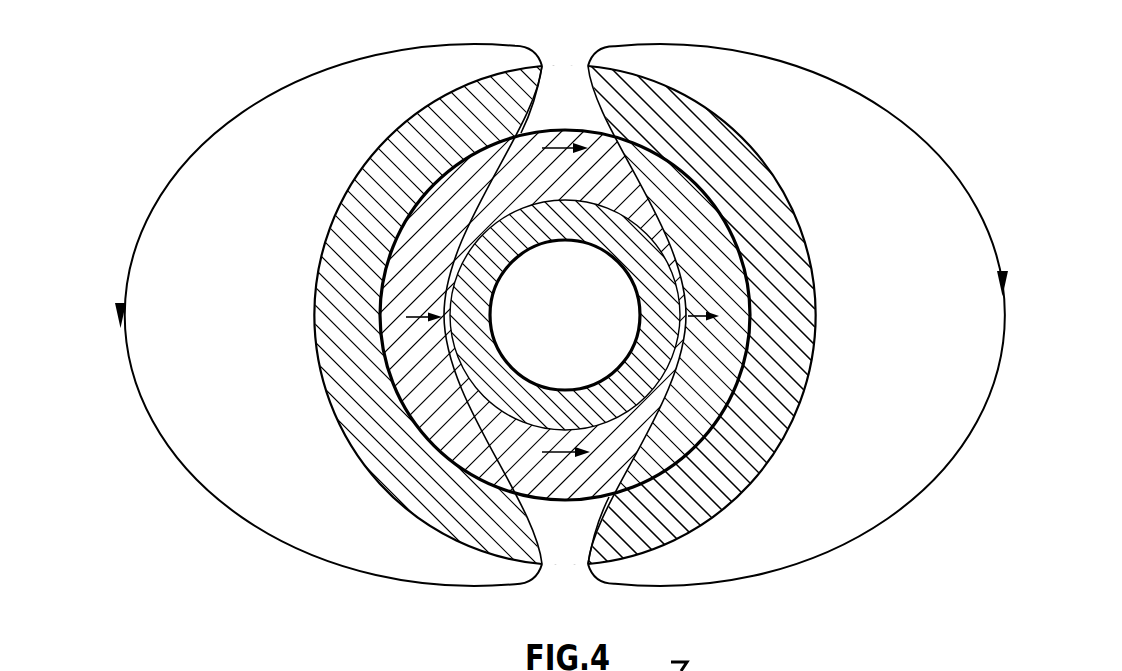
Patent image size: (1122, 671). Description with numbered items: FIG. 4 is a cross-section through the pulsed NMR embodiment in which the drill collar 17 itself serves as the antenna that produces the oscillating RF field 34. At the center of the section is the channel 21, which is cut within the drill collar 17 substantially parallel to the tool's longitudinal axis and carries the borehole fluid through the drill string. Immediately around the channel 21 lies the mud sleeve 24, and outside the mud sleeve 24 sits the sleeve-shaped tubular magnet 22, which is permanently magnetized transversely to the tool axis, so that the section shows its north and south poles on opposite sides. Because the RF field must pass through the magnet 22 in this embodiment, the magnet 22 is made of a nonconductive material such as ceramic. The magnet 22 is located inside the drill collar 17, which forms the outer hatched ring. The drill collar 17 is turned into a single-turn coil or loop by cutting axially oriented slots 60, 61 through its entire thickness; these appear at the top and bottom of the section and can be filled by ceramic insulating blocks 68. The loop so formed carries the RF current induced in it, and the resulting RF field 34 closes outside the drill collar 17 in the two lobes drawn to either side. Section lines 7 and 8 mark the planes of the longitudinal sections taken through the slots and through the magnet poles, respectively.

The drill collar 17 is at (720, 142).
The tubular magnet 22 is at (711, 213).
The mud sleeve 24 is at (634, 369).
The channel 21 is at (593, 355).
The RF field 34 is at (992, 237).
The slot 60 is at (600, 528).
The slot 61 is at (524, 102).
The ceramic insulating blocks 68 is at (563, 80).
The section line 7- 7 is at (563, 62).
The section line 8- 8 is at (306, 315).